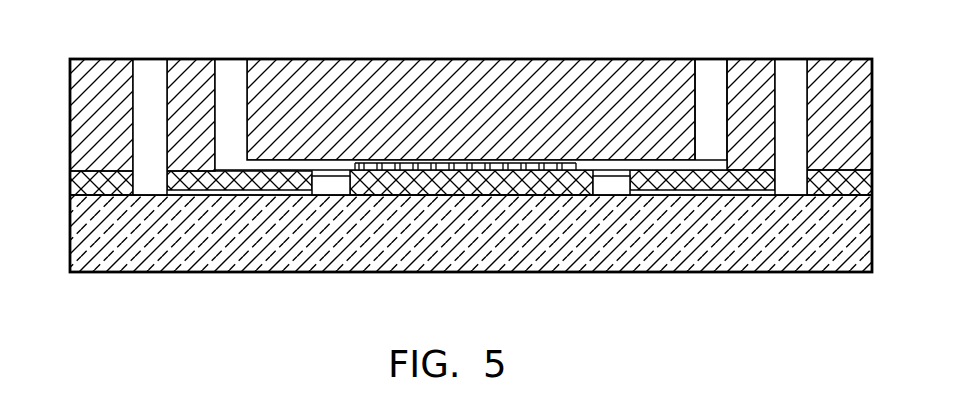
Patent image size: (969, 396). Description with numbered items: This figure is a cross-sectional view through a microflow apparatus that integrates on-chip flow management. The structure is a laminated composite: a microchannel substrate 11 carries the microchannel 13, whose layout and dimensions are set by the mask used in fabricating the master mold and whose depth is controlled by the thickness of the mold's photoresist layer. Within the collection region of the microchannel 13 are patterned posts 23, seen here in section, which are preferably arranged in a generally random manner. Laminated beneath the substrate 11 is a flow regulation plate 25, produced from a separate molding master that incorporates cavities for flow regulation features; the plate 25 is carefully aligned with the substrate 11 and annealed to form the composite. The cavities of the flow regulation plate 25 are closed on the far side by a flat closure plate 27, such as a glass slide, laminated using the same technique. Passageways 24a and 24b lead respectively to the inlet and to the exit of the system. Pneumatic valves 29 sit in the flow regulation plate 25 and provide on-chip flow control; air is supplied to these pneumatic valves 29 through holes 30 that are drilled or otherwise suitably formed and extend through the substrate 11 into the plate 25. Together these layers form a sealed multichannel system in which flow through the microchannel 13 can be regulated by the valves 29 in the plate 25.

The microchannel substrate 11 is at (338, 80).
The microchannel 13 is at (459, 158).
The patterned posts 23 is at (485, 163).
The passageway 24a is at (227, 73).
The passageway 24b is at (712, 73).
The flow regulation plate 25 is at (76, 182).
The flat closure plate 27 is at (78, 237).
The pneumatic valves 29 is at (330, 186).
The holes 30 is at (150, 73).